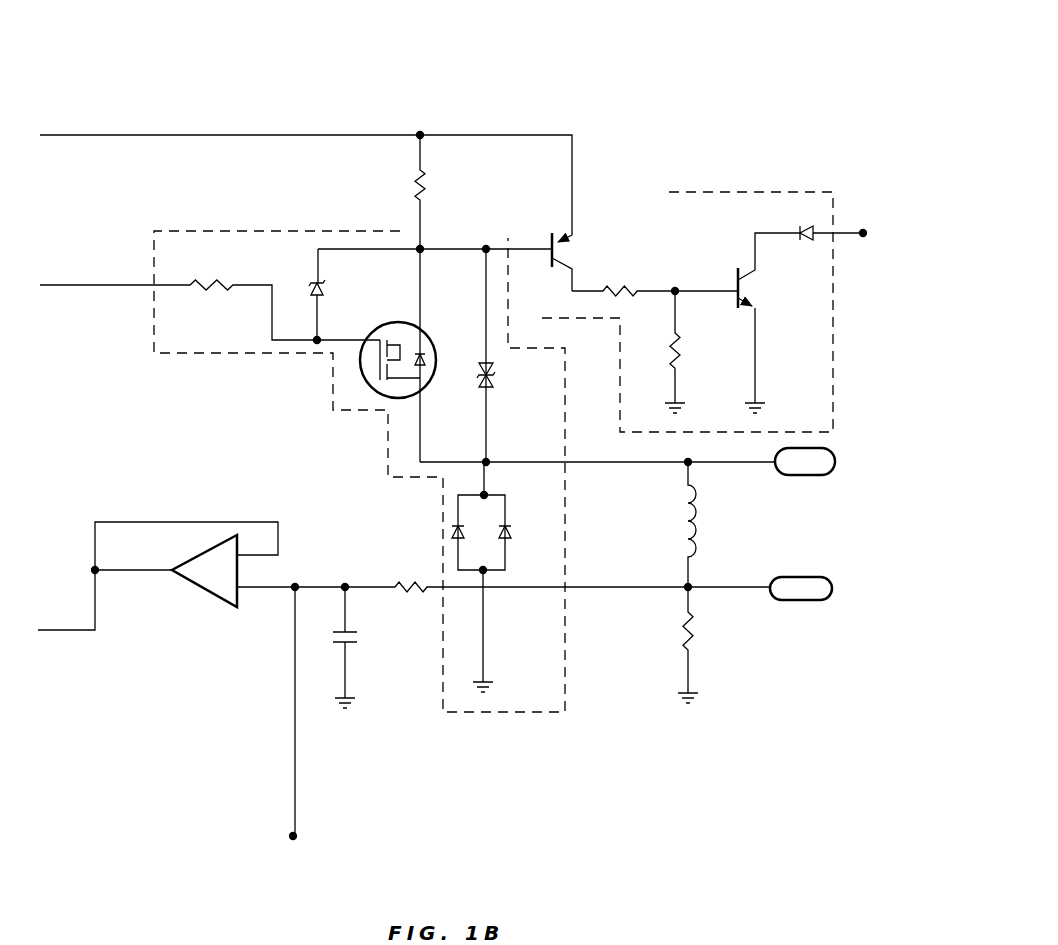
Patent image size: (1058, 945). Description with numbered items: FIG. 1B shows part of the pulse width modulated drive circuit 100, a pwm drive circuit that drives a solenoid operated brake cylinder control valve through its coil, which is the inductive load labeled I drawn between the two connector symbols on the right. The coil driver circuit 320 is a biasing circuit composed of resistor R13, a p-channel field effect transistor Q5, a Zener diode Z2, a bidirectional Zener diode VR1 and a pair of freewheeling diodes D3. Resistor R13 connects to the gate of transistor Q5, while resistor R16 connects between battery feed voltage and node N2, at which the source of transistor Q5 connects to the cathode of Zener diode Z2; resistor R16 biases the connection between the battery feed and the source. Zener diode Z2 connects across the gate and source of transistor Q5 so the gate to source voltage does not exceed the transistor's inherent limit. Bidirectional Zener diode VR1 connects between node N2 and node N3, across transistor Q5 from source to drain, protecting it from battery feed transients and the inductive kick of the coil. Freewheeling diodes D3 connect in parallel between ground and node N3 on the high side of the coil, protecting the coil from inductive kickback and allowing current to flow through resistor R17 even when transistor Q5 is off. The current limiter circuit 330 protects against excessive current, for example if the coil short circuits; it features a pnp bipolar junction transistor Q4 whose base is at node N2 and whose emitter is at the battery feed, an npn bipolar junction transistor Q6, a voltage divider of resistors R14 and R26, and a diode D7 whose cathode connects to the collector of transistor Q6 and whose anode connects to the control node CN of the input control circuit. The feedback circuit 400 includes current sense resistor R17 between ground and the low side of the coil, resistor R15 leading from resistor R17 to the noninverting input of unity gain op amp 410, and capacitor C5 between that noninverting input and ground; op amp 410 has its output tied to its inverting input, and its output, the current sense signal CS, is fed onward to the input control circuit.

The pulse width modulated drive circuit 100 is at (628, 104).
The coil driver circuit 320 is at (228, 231).
The current limiter circuit 330 is at (834, 325).
The feedback circuit 400 is at (727, 628).
The unity gain op amp 410 is at (198, 590).
The resistor R16 is at (410, 181).
The resistor R13 is at (212, 291).
The Zener diode Z2 is at (312, 290).
The p-channel field effect transistor Q5 is at (390, 322).
The node N2 is at (423, 248).
The pnp bipolar junction transistor Q4 is at (550, 240).
The resistor R14 is at (619, 290).
The npn bipolar junction transistor Q6 is at (735, 283).
The diode D7 is at (806, 241).
The control node CN is at (866, 203).
The resistor R26 is at (683, 350).
The bidirectional Zener diode VR1 is at (497, 372).
The node N3 is at (483, 460).
The freewheeling diodes D3 is at (481, 577).
The resistor R15 is at (406, 582).
The inductor / current I is at (715, 517).
The current sense resistor R17 is at (683, 630).
The current sense output CS is at (289, 729).
The capacitor C5 is at (358, 637).